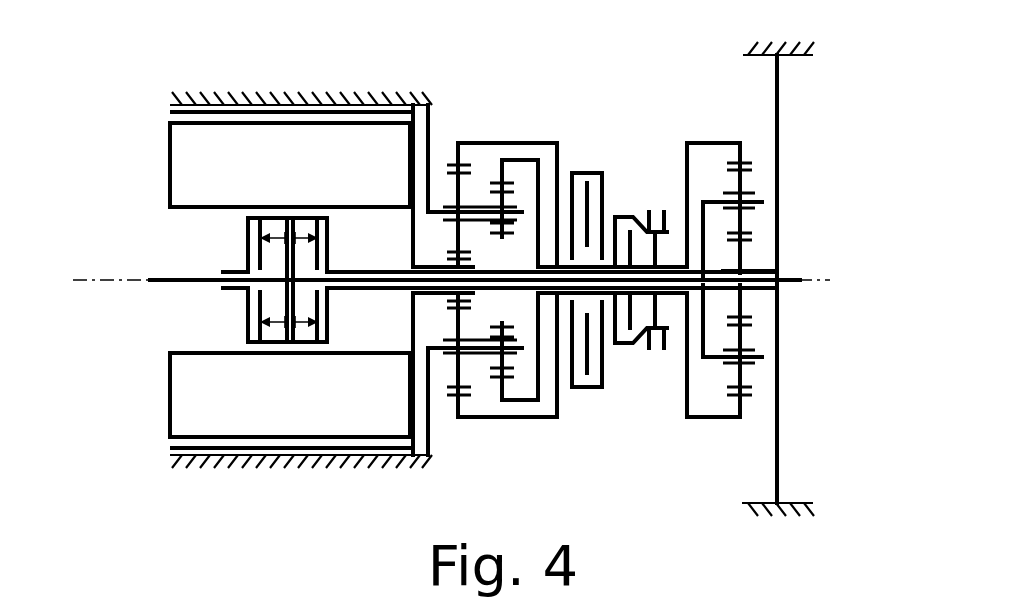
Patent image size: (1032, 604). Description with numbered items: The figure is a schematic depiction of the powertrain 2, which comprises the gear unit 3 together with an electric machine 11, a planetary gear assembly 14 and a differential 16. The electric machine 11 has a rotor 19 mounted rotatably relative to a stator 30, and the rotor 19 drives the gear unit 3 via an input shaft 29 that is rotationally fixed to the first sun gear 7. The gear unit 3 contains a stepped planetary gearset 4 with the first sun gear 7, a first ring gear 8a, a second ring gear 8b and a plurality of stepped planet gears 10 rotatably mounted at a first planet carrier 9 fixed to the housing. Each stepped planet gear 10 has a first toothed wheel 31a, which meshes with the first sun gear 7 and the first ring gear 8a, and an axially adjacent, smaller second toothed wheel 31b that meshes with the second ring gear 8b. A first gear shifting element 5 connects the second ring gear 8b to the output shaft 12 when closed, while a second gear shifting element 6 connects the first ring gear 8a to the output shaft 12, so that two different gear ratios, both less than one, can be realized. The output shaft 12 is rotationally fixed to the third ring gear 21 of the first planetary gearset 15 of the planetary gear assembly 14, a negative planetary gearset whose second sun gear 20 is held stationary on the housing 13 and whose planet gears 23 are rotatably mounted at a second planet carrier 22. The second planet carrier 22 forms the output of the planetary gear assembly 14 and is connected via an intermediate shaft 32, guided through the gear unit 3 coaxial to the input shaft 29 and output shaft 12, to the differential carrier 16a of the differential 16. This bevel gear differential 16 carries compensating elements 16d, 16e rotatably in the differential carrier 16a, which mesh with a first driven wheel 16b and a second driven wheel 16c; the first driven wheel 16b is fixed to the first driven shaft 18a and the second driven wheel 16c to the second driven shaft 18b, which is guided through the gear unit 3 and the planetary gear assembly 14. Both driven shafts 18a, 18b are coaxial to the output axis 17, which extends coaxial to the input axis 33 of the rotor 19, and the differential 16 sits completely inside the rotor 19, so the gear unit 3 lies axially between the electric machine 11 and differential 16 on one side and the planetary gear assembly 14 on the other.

The powertrain 2 is at (156, 82).
The gear unit 3 is at (490, 274).
The stepped planetary gearset 4 is at (487, 148).
The first gear shifting element 5 is at (655, 372).
The second gear shifting element 6 is at (580, 398).
The first sun gear 7 is at (458, 260).
The first ring gear 8a is at (452, 393).
The second ring gear 8b is at (493, 377).
The first planet carrier 9 is at (522, 212).
The stepped planet gear 10 is at (482, 210).
The electric machine 11 is at (156, 449).
The output shaft 12 is at (677, 297).
The housing 13 is at (248, 97).
The planetary gear assembly 14 is at (747, 124).
The first planetary gearset 15 is at (760, 155).
The differential 16 is at (245, 289).
The differential carrier 16a is at (314, 344).
The first driven wheel 16b is at (256, 238).
The second driven wheel 16c is at (318, 245).
The compensating element 16d is at (270, 215).
The compensating element 16e is at (300, 325).
The output axis 17 is at (451, 318).
The input axis 33 is at (138, 283).
The first driven shaft 18a is at (183, 275).
The second driven shaft 18b is at (795, 278).
The rotor 19 is at (193, 180).
The second sun gear 20 is at (748, 313).
The third ring gear 21 is at (750, 398).
The second planet carrier 22 is at (755, 355).
The planet gear 23 is at (743, 378).
The input shaft 29 is at (425, 103).
The stator 30 is at (166, 111).
The first toothed wheel 31a is at (447, 377).
The second toothed wheel 31b is at (487, 363).
The intermediate shaft 32 is at (365, 288).